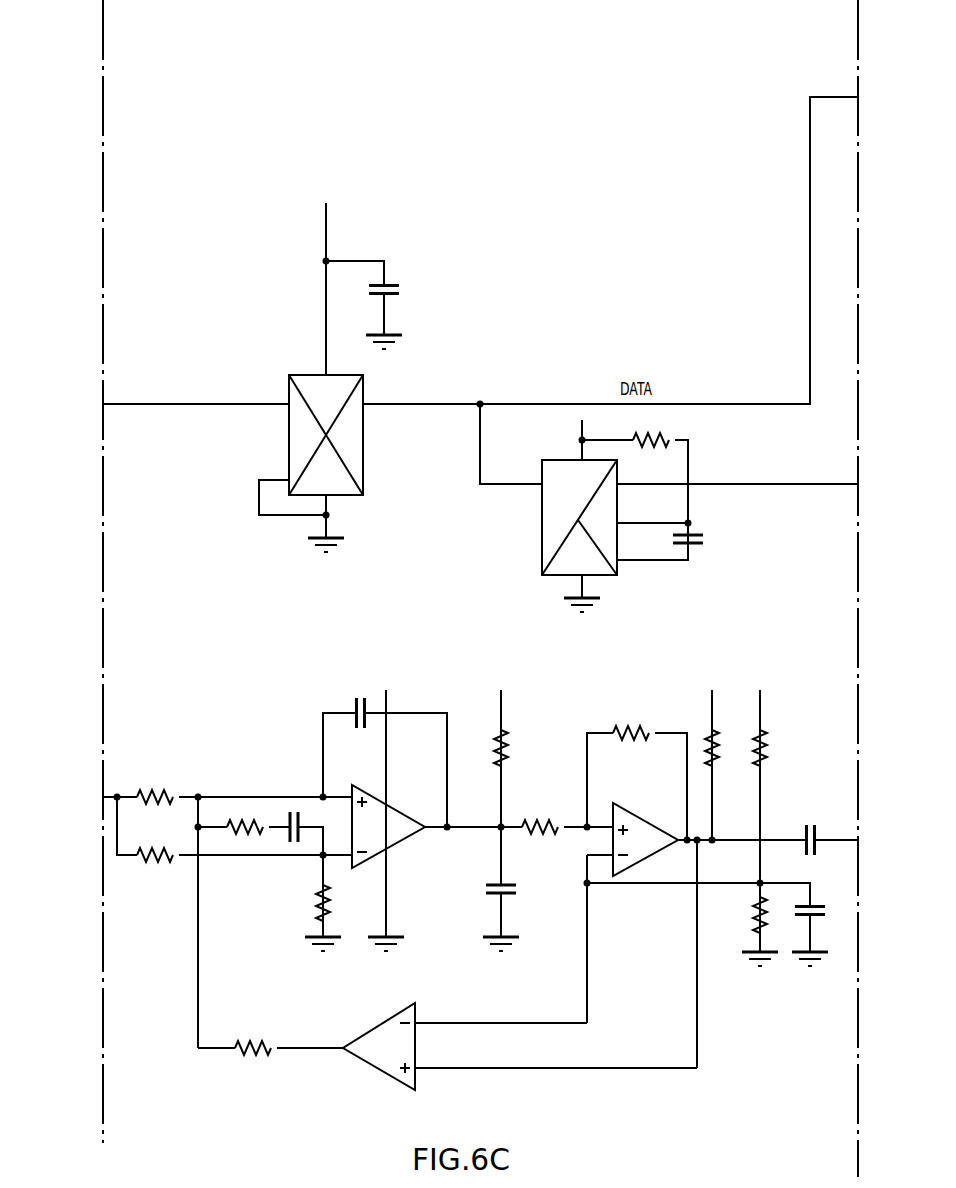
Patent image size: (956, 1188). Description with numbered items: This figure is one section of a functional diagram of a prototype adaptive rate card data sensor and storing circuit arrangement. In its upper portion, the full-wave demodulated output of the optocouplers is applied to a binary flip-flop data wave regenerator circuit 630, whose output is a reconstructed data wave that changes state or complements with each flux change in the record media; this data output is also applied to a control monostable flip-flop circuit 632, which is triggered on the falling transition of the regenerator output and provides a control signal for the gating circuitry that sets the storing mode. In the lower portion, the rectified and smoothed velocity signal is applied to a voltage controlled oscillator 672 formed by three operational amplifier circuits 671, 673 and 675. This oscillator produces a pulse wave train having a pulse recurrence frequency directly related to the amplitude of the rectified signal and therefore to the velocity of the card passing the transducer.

The binary flip-flop data wave regenerator circuit 630 is at (363, 478).
The control monostable flip-flop circuit 632 is at (542, 557).
The operational amplifier circuit 671 is at (393, 840).
The voltage controlled oscillator 672 is at (487, 794).
The operational amplifier circuit 673 is at (656, 826).
The operational amplifier circuit 675 is at (385, 1075).